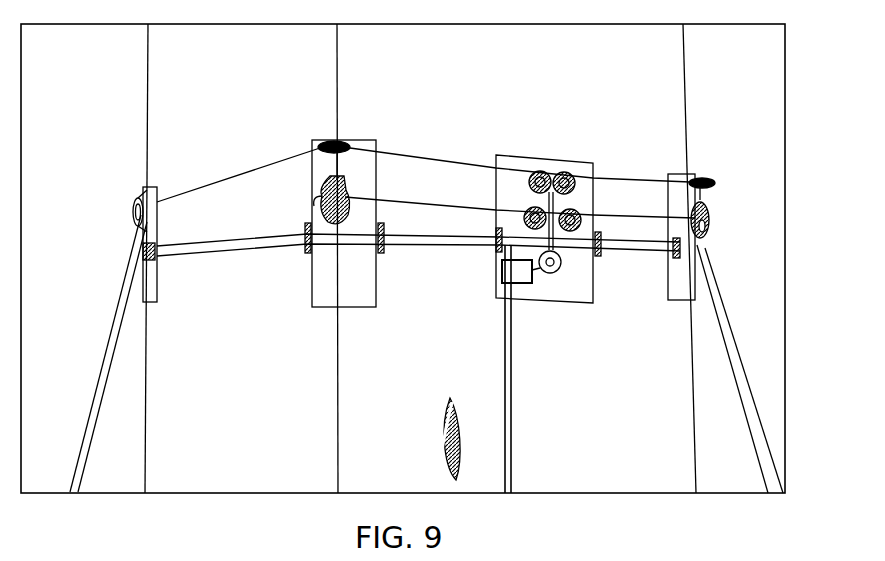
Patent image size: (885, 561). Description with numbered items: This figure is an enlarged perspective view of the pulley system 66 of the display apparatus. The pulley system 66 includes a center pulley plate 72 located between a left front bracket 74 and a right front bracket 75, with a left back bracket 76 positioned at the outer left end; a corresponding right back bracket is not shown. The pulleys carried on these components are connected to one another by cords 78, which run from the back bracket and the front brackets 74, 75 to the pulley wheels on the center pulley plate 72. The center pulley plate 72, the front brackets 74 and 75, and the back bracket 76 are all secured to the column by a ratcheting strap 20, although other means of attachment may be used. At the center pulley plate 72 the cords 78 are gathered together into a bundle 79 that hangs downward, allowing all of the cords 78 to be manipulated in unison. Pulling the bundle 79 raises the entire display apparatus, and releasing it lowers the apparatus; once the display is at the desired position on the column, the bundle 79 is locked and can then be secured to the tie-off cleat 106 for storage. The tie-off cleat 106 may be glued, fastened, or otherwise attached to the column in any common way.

The ratcheting strap 20 is at (215, 253).
The pulley system 66 is at (684, 70).
The center pulley plate 72 is at (532, 158).
The left front bracket 74 is at (357, 140).
The right front bracket 75 is at (688, 172).
The left back bracket 76 is at (152, 187).
The cords 78 is at (248, 170).
The bundle 79 is at (513, 366).
The tie-off cleat 106 is at (450, 398).